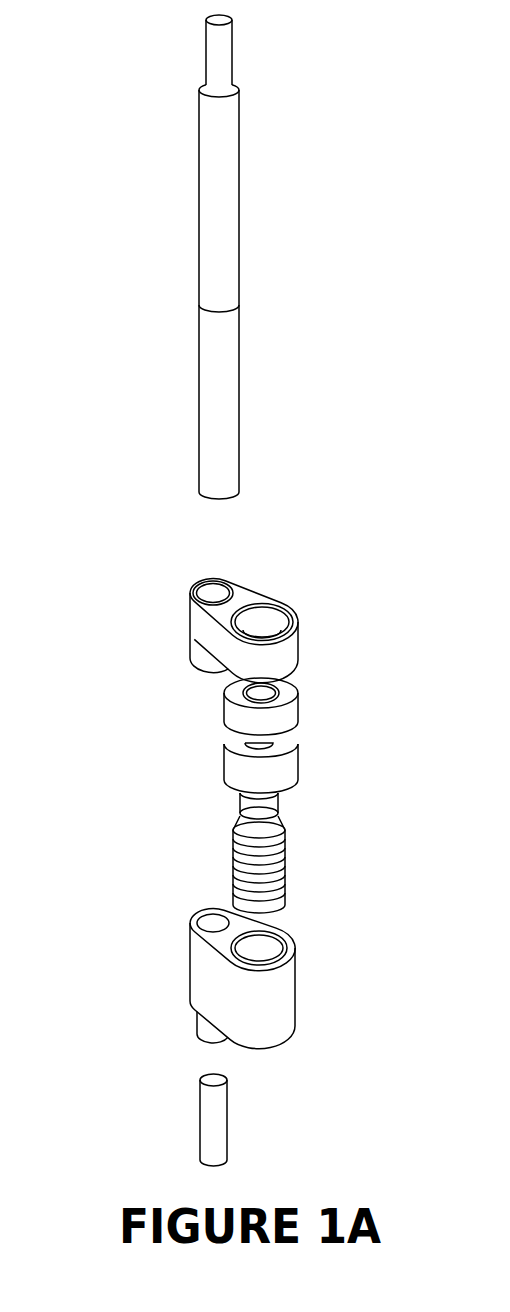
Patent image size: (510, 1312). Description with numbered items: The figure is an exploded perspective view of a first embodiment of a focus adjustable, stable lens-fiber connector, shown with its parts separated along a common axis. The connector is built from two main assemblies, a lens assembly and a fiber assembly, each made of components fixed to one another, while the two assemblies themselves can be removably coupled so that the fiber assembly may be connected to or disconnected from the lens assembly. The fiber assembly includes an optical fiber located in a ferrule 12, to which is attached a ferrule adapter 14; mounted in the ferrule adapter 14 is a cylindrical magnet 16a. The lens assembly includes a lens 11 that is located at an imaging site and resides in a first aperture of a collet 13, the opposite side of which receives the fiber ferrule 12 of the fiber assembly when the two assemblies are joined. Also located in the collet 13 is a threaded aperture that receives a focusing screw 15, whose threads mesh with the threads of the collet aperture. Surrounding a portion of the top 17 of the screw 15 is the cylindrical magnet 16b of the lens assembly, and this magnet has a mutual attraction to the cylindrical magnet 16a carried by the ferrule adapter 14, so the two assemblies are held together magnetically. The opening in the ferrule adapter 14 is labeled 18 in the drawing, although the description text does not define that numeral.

The lens 11 is at (227, 1112).
The ferrule 12 is at (232, 228).
The collet 13 is at (298, 973).
The ferrule adapter 14 is at (289, 581).
The focusing screw 15 is at (292, 837).
The cylindrical magnet 16a is at (298, 698).
The cylindrical magnet 16b is at (298, 765).
The top of the screw 17 is at (235, 803).
The bore 18 is at (265, 622).